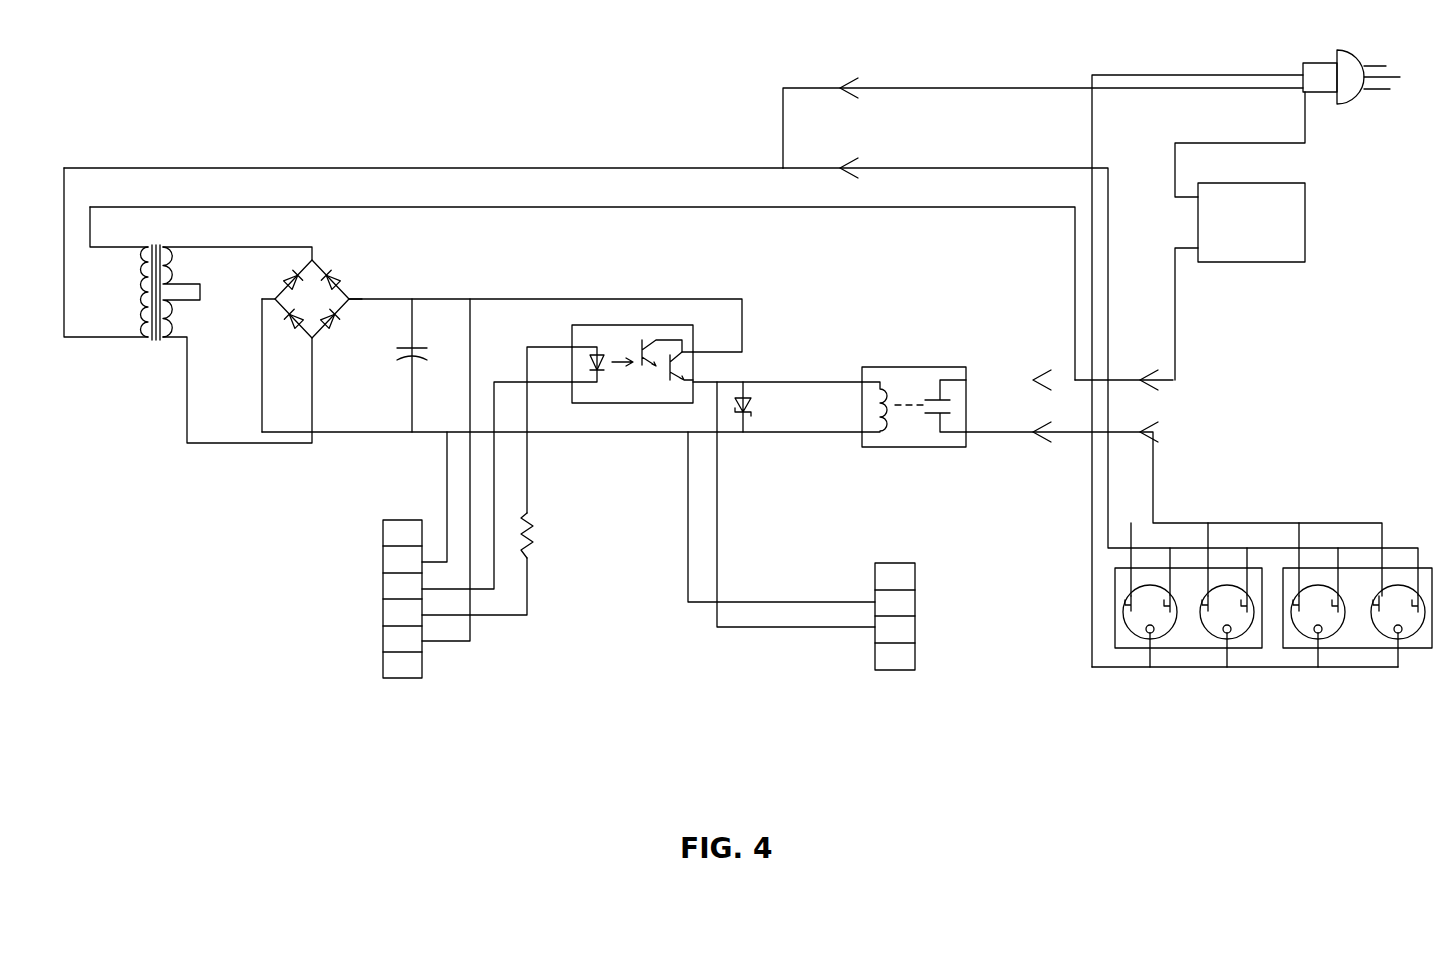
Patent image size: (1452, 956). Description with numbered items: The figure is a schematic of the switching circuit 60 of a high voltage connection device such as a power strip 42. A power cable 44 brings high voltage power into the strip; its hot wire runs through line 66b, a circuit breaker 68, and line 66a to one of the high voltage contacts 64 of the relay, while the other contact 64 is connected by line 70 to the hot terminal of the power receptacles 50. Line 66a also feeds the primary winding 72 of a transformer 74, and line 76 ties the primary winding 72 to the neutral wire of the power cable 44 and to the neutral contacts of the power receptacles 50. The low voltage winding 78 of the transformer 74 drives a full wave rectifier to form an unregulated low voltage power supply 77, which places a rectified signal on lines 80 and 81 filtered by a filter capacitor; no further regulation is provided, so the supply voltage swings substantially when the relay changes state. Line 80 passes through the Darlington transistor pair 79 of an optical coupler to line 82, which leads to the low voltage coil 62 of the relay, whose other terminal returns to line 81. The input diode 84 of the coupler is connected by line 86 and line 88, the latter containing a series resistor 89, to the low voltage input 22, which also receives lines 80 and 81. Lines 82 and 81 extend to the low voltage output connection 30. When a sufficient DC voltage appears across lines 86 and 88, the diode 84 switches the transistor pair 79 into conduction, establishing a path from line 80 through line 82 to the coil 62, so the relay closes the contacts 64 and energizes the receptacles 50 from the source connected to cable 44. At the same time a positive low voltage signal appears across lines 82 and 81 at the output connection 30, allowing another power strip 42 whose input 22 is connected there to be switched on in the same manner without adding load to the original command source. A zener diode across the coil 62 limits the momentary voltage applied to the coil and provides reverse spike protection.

The power cable 44 is at (1322, 63).
The line 76 is at (352, 168).
The line 66a is at (440, 207).
The line 66b is at (1290, 143).
The circuit breaker 68 is at (1305, 207).
The low voltage power supply 77 is at (223, 305).
The primary winding 72 is at (141, 297).
The transformer 74 is at (156, 340).
The low voltage winding 78 is at (173, 268).
The line 80 is at (388, 297).
The switching circuit 60 is at (635, 317).
The input diode 84 is at (598, 356).
The transistor pair 79 is at (668, 338).
The line 82 is at (717, 523).
The line 81 is at (330, 432).
The line 86 is at (494, 490).
The line 88 is at (514, 483).
The series resistor 89 is at (531, 535).
The low voltage input 22 is at (400, 680).
The low voltage output connection 30 is at (890, 672).
The power strip 42 is at (928, 642).
The low voltage coil 62 is at (876, 388).
The high voltage contacts 64 is at (950, 400).
The line 70 is at (1153, 500).
The power receptacles 50 is at (1165, 632).